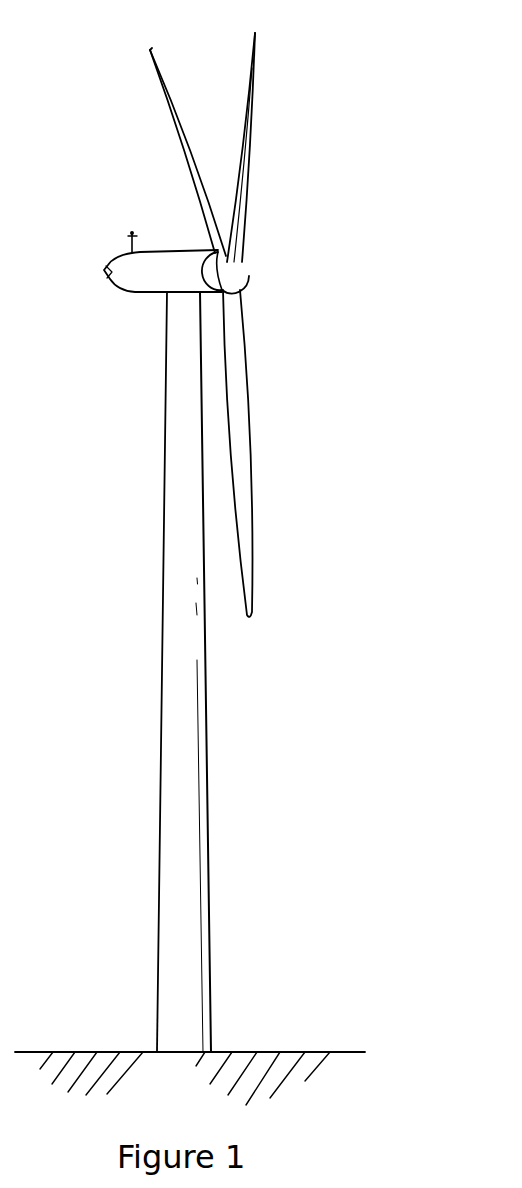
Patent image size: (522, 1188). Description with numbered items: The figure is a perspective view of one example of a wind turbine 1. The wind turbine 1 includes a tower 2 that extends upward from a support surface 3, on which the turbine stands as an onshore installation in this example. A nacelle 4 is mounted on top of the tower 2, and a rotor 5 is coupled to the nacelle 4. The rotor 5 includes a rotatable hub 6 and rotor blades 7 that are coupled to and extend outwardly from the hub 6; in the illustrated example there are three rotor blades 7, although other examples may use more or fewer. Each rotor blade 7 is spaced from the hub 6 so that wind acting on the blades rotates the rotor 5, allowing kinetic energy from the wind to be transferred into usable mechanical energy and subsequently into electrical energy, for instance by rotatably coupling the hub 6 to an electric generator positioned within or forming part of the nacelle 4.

The wind turbine 1 is at (223, 557).
The tower 2 is at (170, 775).
The support surface 3 is at (92, 1052).
The nacelle 4 is at (147, 295).
The rotor 5 is at (262, 242).
The hub 6 is at (251, 283).
The rotor blade 7 is at (252, 70).